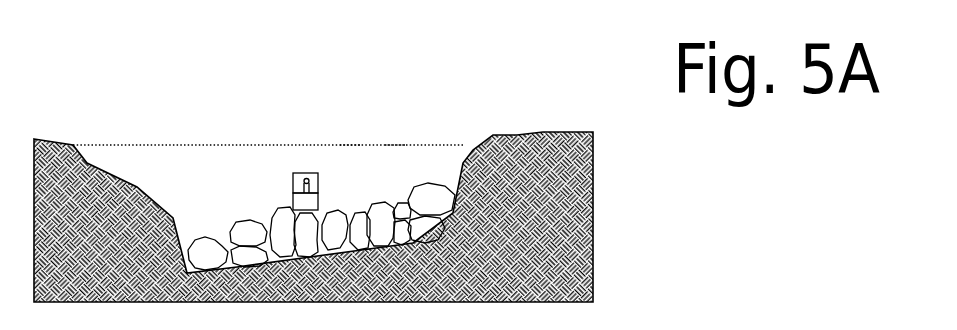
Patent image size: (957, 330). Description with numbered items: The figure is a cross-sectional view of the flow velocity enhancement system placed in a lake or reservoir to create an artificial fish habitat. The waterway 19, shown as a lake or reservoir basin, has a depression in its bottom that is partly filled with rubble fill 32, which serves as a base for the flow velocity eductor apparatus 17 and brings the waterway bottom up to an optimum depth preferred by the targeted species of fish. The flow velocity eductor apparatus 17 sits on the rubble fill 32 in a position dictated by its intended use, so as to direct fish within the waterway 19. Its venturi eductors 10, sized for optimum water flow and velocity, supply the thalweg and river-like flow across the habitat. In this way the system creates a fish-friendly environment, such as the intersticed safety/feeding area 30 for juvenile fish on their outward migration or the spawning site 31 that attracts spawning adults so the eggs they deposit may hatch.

The venturi eductor 10 is at (281, 148).
The flow velocity eductor apparatus 17 is at (306, 167).
The waterway 19 is at (143, 145).
The intersticed safety/feeding area 30 is at (350, 137).
The spawning site 31 is at (395, 137).
The rubble fill 32 is at (265, 198).